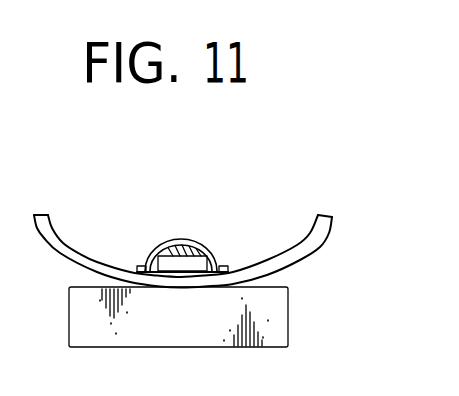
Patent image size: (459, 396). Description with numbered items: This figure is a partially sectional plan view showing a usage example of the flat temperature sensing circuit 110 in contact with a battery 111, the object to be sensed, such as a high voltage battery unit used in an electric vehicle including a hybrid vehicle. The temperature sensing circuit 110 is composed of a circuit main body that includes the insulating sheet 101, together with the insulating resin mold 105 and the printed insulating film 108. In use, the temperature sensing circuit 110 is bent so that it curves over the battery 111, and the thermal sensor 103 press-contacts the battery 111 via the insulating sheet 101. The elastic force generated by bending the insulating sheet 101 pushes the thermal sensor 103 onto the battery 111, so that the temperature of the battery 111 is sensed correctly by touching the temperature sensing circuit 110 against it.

The insulating sheet 101 is at (295, 251).
The thermal sensor 103 is at (195, 263).
The insulating resin mold 105 is at (177, 250).
The printed insulating film 108 is at (156, 256).
The temperature sensing circuit 110 is at (292, 240).
The battery 111 is at (288, 315).